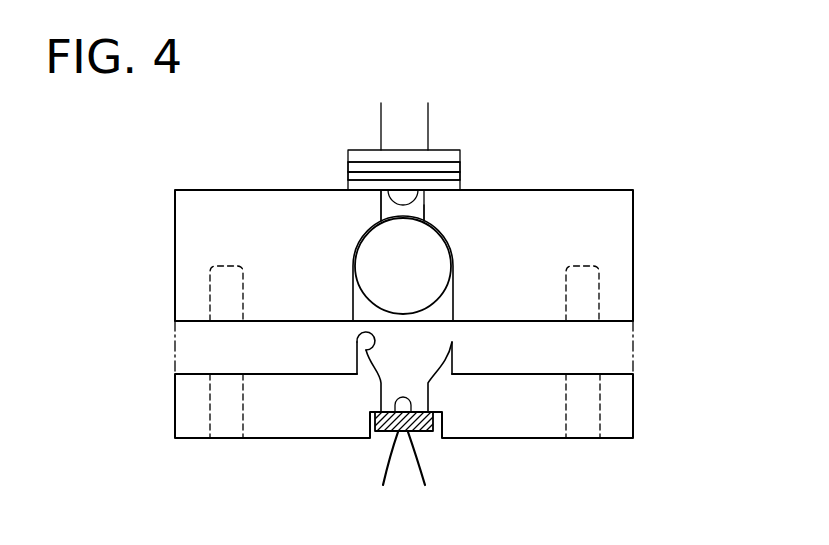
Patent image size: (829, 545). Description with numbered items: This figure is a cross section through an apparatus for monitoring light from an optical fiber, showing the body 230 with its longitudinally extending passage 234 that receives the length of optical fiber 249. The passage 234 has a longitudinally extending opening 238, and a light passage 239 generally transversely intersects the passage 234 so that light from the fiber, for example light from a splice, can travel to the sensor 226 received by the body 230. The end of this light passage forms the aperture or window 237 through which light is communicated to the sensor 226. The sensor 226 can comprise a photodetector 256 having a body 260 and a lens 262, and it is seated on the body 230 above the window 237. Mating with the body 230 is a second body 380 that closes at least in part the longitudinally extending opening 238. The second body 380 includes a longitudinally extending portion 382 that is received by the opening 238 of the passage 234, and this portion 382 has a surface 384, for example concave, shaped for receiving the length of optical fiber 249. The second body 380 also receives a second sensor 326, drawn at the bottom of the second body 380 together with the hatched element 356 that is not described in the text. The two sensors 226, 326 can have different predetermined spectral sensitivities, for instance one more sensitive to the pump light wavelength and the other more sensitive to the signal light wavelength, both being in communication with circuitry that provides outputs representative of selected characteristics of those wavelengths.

The sensor 226 is at (472, 173).
The body 230 is at (580, 247).
The longitudinally extending passage 234 is at (353, 312).
The aperture 237 is at (381, 203).
The longitudinally extending opening 238 is at (440, 325).
The light passage 239 is at (421, 210).
The length of optical fiber 249 is at (430, 275).
The photodetector 256 is at (366, 168).
The body of photodetector 260 is at (348, 178).
The lens 262 is at (413, 198).
The sensor 326 is at (431, 441).
The heater element 356 is at (378, 433).
The second body 380 is at (618, 427).
The longitudinally extending portion 382 is at (466, 362).
The surface 384 is at (332, 350).